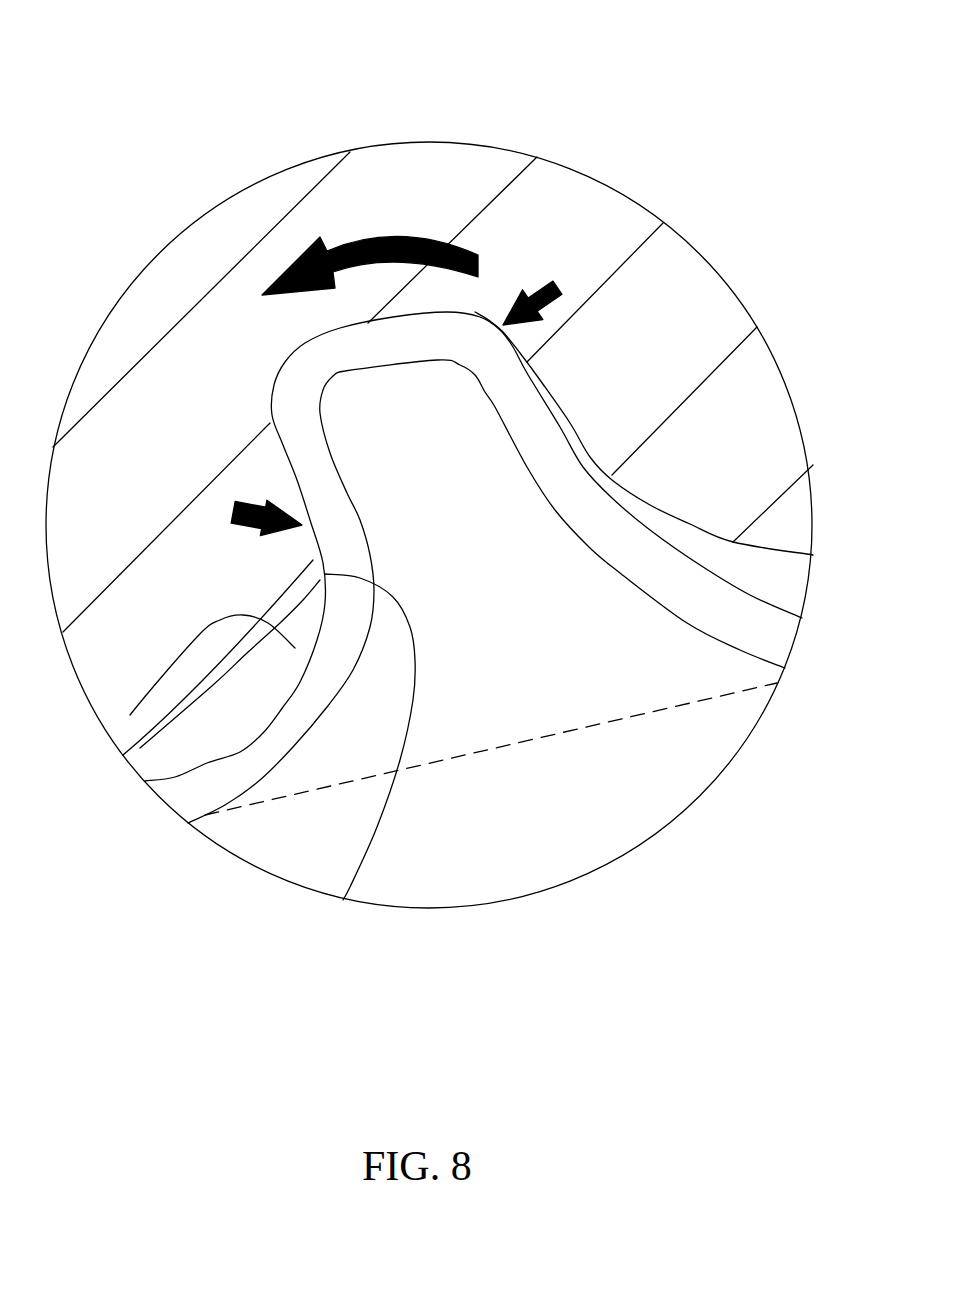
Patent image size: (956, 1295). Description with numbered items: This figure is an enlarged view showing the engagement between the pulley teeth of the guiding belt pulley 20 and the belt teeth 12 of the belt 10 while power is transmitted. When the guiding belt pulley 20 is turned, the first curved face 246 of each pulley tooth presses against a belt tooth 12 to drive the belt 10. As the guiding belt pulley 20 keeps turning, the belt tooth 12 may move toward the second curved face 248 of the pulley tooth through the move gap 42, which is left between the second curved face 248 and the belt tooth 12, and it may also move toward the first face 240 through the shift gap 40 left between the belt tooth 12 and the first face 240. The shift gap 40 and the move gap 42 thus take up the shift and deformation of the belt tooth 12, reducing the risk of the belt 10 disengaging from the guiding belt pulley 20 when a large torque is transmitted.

The belt 10 is at (407, 185).
The belt teeth 12 is at (273, 467).
The guiding belt pulley 20 is at (491, 816).
The shift gap 40 is at (130, 715).
The move gap 42 is at (517, 345).
The first face 240 is at (343, 900).
The first curved face 246 is at (276, 378).
The second curved face 248 is at (480, 313).